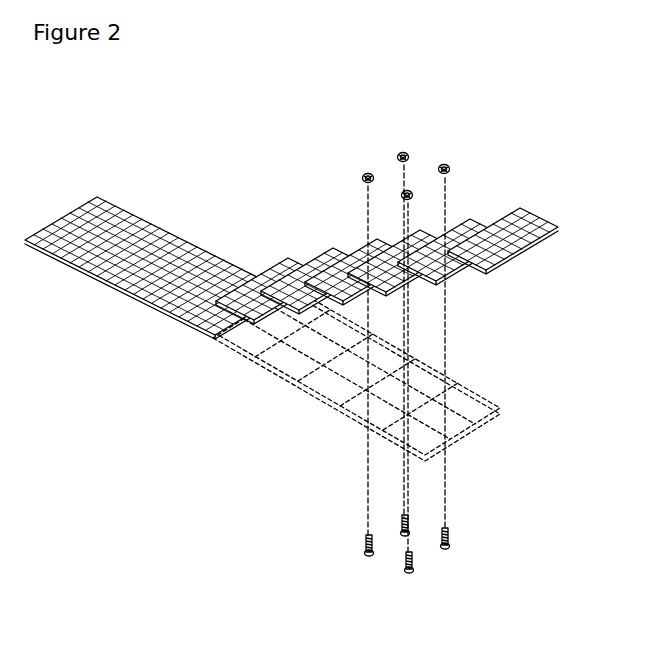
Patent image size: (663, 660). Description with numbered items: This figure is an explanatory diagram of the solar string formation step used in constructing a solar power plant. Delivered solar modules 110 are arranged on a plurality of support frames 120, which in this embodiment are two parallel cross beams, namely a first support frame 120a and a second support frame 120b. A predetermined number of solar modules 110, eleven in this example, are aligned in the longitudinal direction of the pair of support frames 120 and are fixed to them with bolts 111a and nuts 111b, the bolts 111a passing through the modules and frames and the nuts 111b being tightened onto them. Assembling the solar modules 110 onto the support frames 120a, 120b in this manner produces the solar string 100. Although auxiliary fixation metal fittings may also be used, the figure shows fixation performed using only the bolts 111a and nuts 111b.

The solar string 100 is at (240, 150).
The solar module 110 is at (523, 207).
The bolt 111a is at (458, 579).
The nut 111b is at (398, 140).
The support frame 120 is at (415, 383).
The first support frame 120a is at (475, 410).
The second support frame 120b is at (468, 436).